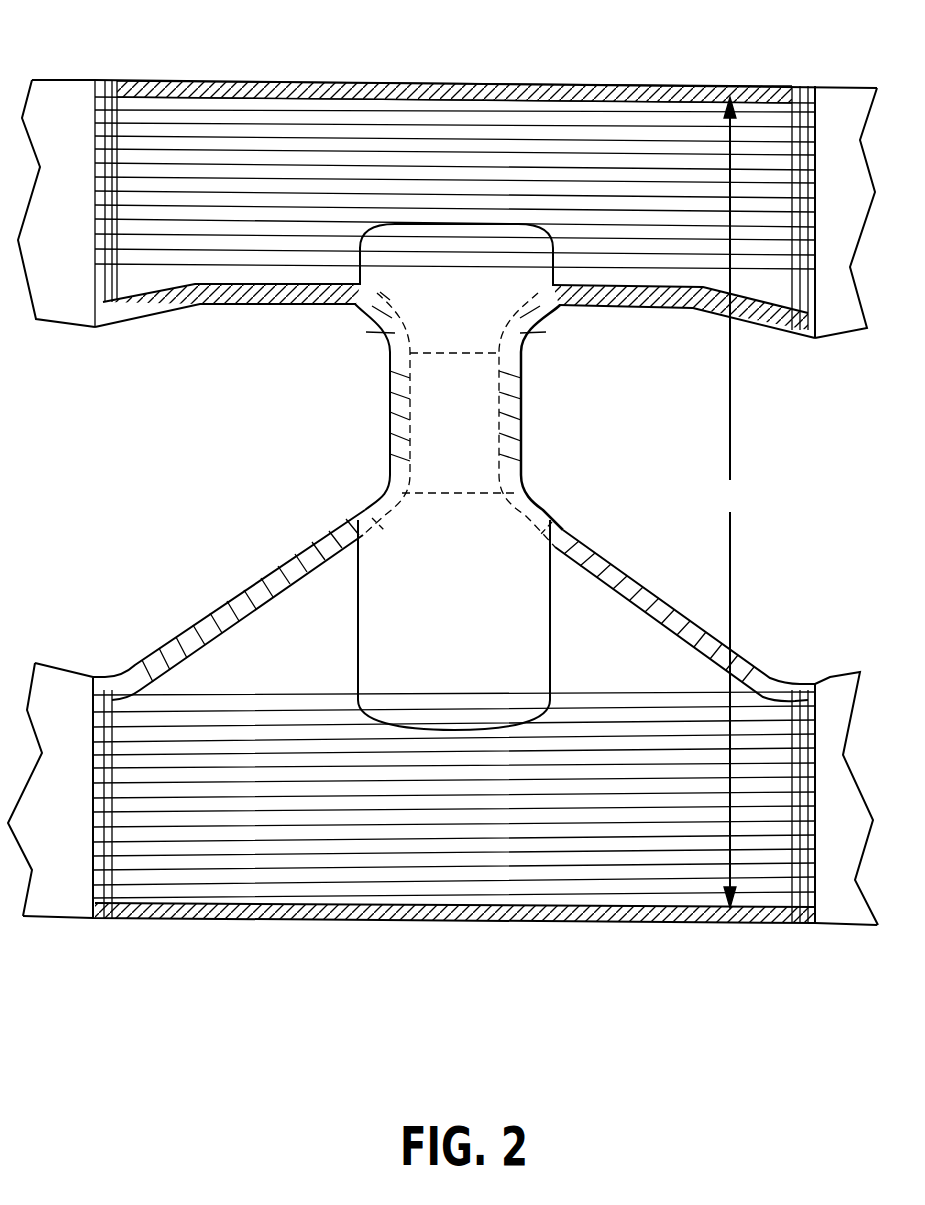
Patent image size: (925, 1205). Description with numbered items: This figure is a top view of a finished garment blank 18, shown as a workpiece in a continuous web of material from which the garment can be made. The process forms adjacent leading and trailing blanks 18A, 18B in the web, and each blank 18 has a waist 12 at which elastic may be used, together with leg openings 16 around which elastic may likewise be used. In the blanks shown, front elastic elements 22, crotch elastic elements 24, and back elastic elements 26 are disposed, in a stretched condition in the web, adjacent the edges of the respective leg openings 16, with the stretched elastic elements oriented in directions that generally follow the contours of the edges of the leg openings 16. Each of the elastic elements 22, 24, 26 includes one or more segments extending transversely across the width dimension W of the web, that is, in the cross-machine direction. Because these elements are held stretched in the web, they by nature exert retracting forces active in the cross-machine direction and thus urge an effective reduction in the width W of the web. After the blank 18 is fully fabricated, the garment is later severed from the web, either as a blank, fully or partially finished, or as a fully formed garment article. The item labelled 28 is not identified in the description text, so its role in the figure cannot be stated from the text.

The waist 12 is at (380, 84).
The leg openings 16 is at (153, 322).
The blank 18 is at (589, 79).
The leading blank 18A is at (183, 77).
The trailing blank 18B is at (77, 77).
The front elastic elements 22 is at (270, 293).
The crotch elastic elements 24 is at (390, 420).
The back elastic elements 26 is at (233, 610).
The honeycomb core 28 is at (62, 263).
The width dimension of the web W is at (731, 502).